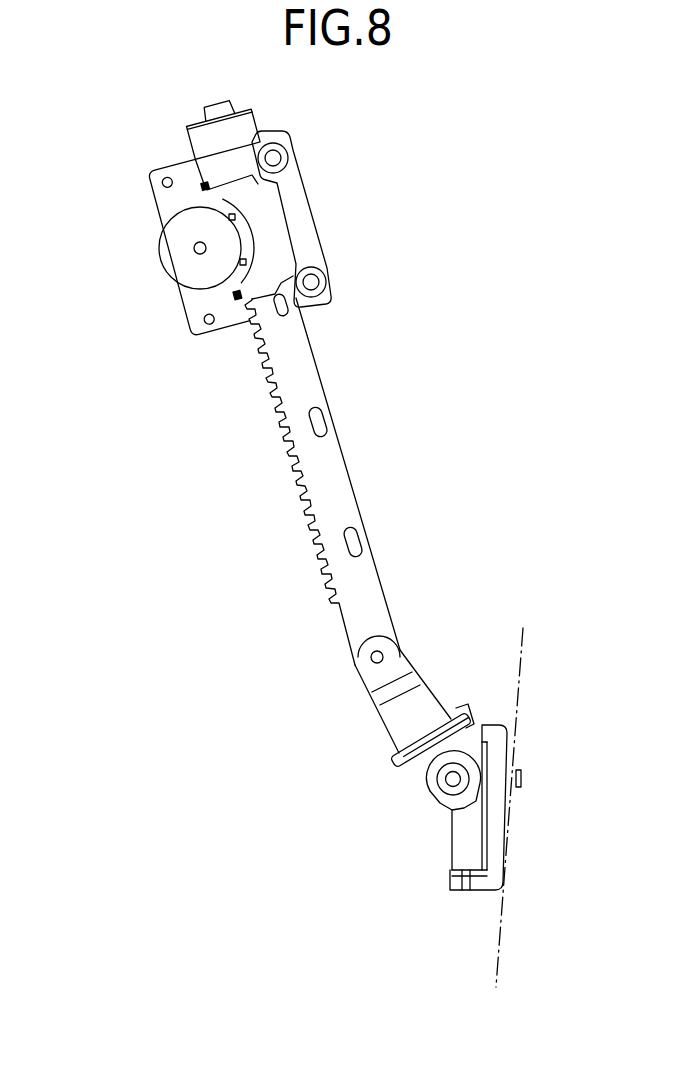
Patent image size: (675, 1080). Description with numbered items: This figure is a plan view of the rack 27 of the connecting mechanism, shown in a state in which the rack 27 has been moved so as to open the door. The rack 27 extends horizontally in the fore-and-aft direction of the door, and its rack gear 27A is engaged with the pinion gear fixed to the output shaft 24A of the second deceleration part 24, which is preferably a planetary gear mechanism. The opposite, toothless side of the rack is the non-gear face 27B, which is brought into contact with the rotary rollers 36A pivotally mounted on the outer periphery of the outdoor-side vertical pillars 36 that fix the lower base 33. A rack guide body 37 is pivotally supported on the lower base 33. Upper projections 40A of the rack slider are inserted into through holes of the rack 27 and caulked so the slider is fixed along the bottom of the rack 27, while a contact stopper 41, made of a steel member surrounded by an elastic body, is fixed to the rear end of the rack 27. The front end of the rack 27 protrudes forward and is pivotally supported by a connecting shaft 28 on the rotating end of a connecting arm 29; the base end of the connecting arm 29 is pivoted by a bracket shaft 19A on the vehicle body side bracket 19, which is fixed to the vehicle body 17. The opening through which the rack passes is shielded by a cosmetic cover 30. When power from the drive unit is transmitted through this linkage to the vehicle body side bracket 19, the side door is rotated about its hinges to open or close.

The vehicle body 17 is at (520, 690).
The vehicle body side bracket 19 is at (463, 852).
The bracket shaft 19A is at (444, 780).
The second deceleration part 24 is at (170, 233).
The output shaft 24A is at (192, 253).
The rack 27 is at (298, 481).
The rack gear 27A is at (273, 388).
The non-gear face 27B is at (318, 364).
The connecting shaft 28 is at (373, 656).
The connecting arm 29 is at (383, 711).
The cosmetic cover 30 is at (462, 708).
The lower base 33 is at (184, 170).
The vertical pillar 36 is at (277, 159).
The rotary roller 36A is at (290, 148).
The rack guide body 37 is at (283, 229).
The upper projection 40A is at (357, 537).
The contact stopper 41 is at (250, 127).